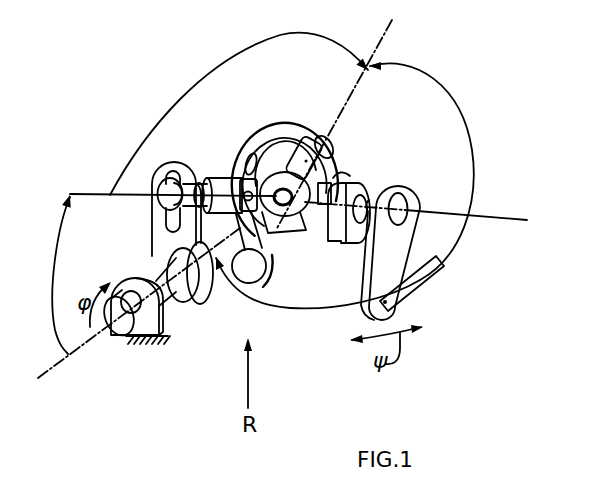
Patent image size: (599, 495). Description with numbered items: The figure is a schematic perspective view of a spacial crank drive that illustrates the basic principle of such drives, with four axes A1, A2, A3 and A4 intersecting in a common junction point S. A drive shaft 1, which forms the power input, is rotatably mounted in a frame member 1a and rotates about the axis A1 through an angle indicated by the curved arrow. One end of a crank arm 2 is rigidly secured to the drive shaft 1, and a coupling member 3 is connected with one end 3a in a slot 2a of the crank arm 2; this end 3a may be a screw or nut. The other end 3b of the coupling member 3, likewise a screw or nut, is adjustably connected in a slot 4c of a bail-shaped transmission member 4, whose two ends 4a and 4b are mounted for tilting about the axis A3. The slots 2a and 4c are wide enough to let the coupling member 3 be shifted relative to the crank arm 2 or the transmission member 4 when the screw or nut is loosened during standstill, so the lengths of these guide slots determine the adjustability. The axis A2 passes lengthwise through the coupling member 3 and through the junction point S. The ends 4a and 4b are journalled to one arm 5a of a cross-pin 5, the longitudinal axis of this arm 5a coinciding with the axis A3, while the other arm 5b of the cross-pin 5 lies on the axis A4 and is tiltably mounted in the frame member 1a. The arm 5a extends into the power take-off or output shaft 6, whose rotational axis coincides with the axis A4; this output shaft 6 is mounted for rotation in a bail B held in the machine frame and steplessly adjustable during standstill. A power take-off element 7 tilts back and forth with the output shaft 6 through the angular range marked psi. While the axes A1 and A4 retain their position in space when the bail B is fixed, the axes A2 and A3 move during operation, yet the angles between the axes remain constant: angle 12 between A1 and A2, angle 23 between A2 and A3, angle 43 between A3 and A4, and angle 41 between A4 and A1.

The drive shaft 1 is at (118, 328).
The frame member 1a is at (162, 326).
The crank arm 2 is at (158, 245).
The slot 2a is at (160, 222).
The coupling member 3 is at (222, 182).
The end of coupling member 3a is at (163, 186).
The other end of coupling member 3b is at (238, 150).
The transmission member 4 is at (280, 130).
The end of transmission member 4a is at (252, 268).
The end of transmission member 4b is at (328, 150).
The slot 4c is at (304, 147).
The cross-pin 5 is at (283, 236).
The arm of cross-pin 5a is at (332, 164).
The arm of cross-pin 5b is at (322, 188).
The output shaft 6 is at (400, 206).
The power take-off element 7 is at (396, 313).
The bail B is at (335, 239).
The common junction point S is at (294, 222).
The angle theta 12 is at (38, 274).
The angle theta 23 is at (239, 106).
The angle theta 41 is at (318, 294).
The angle theta 43 is at (442, 171).
The axis A1 is at (127, 310).
The axis A2 is at (154, 188).
The axis A3 is at (347, 115).
The axis A4 is at (432, 218).